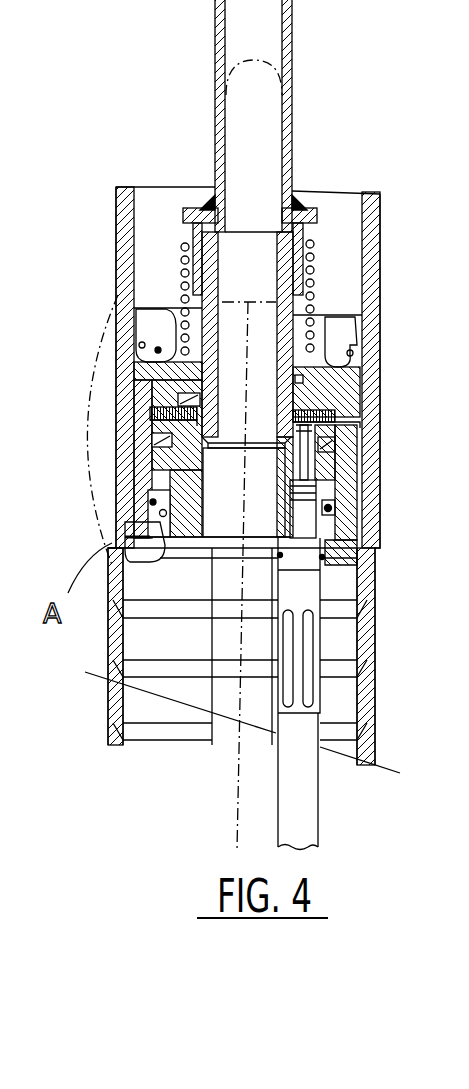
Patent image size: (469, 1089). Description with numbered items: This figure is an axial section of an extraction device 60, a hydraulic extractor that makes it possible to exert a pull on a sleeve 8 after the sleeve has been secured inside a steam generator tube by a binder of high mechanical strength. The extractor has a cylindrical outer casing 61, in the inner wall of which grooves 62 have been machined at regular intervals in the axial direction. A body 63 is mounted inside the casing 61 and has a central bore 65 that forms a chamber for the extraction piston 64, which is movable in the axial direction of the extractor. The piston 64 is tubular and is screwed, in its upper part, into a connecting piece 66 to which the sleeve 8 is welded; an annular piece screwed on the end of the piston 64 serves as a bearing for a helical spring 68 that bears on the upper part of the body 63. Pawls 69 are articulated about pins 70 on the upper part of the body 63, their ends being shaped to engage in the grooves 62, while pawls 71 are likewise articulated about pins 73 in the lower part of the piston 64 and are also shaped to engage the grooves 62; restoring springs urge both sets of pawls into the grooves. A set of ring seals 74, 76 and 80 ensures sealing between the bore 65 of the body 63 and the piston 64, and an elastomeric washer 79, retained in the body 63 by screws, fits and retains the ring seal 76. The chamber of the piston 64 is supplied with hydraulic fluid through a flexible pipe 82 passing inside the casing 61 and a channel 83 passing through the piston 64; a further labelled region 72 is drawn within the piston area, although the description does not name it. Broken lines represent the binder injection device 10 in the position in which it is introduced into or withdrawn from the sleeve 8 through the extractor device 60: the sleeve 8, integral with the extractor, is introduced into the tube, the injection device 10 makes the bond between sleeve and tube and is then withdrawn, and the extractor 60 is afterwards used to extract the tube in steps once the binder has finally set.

The sleeve 8 is at (292, 70).
The binder injection device 10 is at (268, 118).
The extraction device 60 is at (389, 333).
The cylindrical outer casing 61 is at (370, 262).
The grooves 62 is at (128, 433).
The body 63 is at (350, 482).
The extraction piston 64 is at (175, 556).
The central bore 65 is at (320, 527).
The connecting piece 66 is at (317, 213).
The helical spring 68 is at (178, 288).
The pawls 69 is at (136, 309).
The pins 70 is at (157, 350).
The pawls 71 is at (118, 523).
The chamber 72 is at (244, 492).
The pins 73 is at (148, 503).
The ring seal 74 is at (332, 443).
The ring seal 76 is at (305, 404).
The elastomeric washer 79 is at (333, 418).
The ring seal 80 is at (303, 373).
The flexible pipe 82 is at (305, 787).
The channel 83 is at (300, 513).